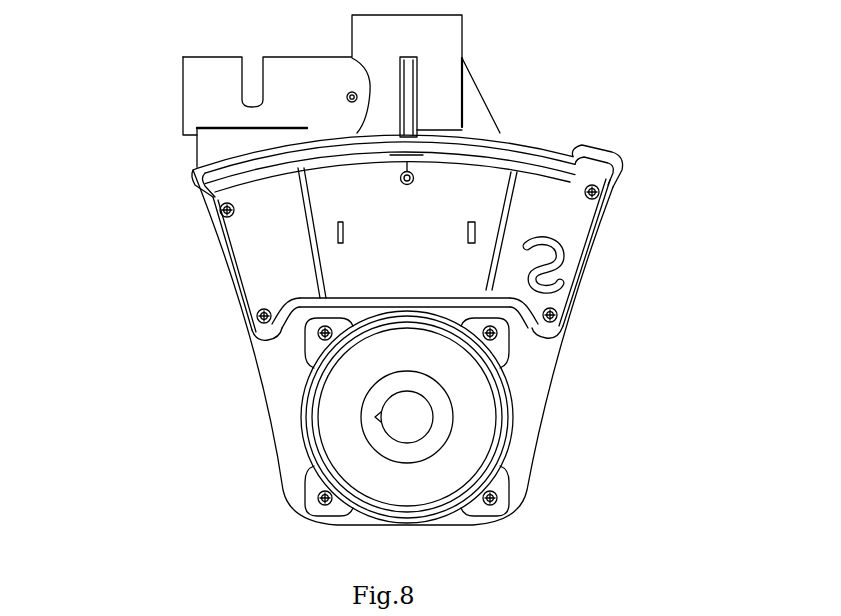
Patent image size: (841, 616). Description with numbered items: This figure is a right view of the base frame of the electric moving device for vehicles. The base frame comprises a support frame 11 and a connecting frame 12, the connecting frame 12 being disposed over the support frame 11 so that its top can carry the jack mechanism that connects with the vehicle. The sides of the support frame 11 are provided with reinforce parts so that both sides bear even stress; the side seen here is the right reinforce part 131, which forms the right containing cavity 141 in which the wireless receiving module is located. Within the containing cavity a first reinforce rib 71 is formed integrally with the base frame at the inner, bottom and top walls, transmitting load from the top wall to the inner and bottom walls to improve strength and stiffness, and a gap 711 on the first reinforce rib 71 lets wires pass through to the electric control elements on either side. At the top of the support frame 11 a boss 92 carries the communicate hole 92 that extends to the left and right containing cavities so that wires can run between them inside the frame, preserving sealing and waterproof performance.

The support frame 11 is at (275, 360).
The connecting frame 12 is at (438, 100).
The right reinforce part 131 is at (217, 237).
The right containing cavity 141 is at (573, 267).
The first reinforce rib 71 is at (530, 245).
The gap 711 is at (307, 218).
The boss with communicate hole 92 is at (588, 170).